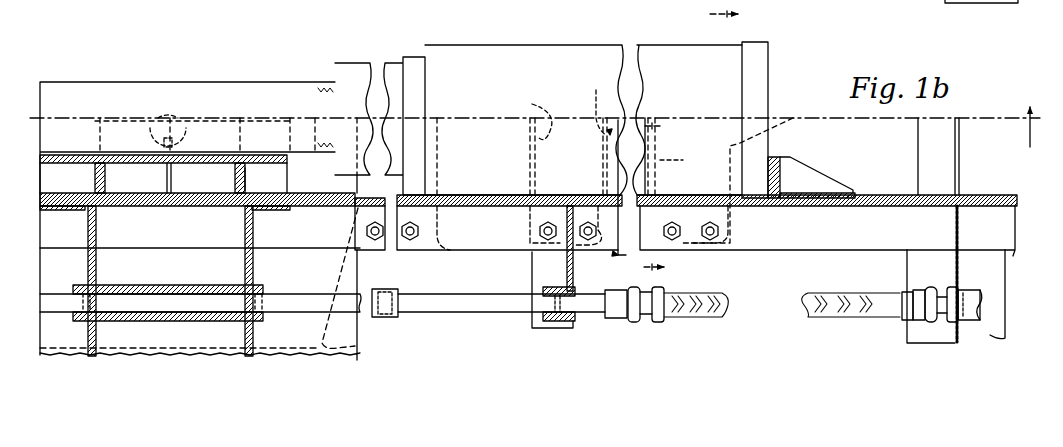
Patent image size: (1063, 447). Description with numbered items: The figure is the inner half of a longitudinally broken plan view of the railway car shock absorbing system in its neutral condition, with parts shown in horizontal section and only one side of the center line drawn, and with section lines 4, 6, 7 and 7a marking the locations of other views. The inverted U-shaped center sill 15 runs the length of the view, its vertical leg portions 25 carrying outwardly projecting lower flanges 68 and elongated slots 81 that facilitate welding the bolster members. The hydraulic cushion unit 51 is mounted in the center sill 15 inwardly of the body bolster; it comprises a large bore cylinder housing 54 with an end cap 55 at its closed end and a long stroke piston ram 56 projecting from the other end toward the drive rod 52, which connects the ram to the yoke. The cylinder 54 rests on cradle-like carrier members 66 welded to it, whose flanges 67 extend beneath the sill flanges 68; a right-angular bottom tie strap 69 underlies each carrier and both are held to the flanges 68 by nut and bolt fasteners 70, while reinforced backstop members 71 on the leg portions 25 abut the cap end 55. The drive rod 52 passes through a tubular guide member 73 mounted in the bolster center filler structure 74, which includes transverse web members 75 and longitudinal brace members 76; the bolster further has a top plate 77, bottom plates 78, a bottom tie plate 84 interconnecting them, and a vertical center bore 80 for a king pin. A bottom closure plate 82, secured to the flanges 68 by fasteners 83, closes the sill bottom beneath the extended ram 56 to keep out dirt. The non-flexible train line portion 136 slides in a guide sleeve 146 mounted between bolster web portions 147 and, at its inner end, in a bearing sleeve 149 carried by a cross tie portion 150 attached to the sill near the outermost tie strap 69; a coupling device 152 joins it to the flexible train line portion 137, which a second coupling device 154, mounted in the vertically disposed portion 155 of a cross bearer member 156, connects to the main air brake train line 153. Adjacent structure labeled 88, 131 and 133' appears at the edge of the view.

The section line 4 is at (974, 151).
The section line 6 is at (717, 14).
The section line 7 is at (621, 192).
The section line 7a is at (666, 197).
The center sill 15 is at (474, 213).
The vertical leg portions 25 is at (490, 211).
The hydraulic cushion unit 51 is at (474, 42).
The drive rod 52 is at (247, 80).
The cylinder housing 54 is at (548, 60).
The end cap 55 is at (757, 40).
The piston ram 56 is at (355, 76).
The carrier members 66 is at (797, 106).
The flanges of carrier members 67 is at (632, 298).
The lower flanges of center sill 68 is at (790, 238).
The bottom tie strap 69 is at (606, 129).
The nut and bolt fasteners 70 is at (586, 241).
The backstop members 71 is at (800, 178).
The tubular guide member 73 is at (235, 193).
The bolster center filler structure 74 is at (251, 170).
The transverse web members 75 is at (108, 184).
The longitudinal brace members 76 is at (55, 172).
The top plate 77 is at (439, 4).
The bottom plates 78 is at (214, 304).
The center bore 80 is at (165, 112).
The elongated slots 81 is at (303, 208).
The bottom closure plate 82 is at (447, 242).
The nut and bolt fasteners 83 is at (377, 238).
The bottom tie plate 84 is at (974, 8).
The member 88 is at (34, 0).
The member 131 is at (275, 0).
The member 133' is at (230, 11).
The non-flexible train line portion 136 is at (435, 307).
The flexible train line portion 137 is at (836, 302).
The guide sleeve 146 is at (205, 273).
The web portions 147 is at (96, 264).
The bearing sleeve 149 is at (546, 321).
The cross tie portion 150 is at (566, 288).
The coupling device 152 is at (646, 327).
The air brake train line 153 is at (990, 332).
The coupling device 154 is at (919, 290).
The vertically disposed portion 155 is at (962, 274).
The cross bearer member 156 is at (918, 330).